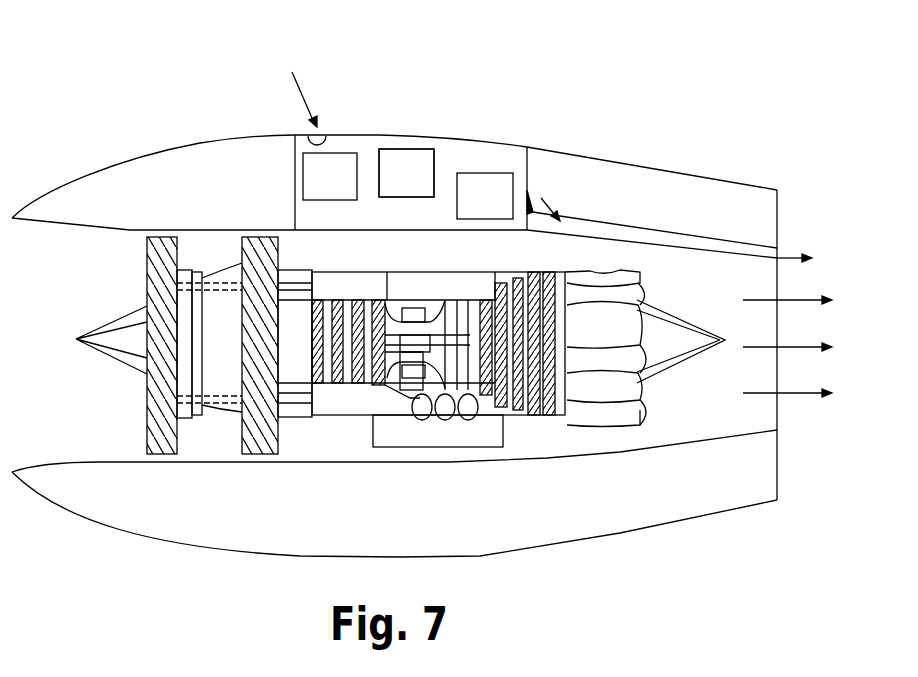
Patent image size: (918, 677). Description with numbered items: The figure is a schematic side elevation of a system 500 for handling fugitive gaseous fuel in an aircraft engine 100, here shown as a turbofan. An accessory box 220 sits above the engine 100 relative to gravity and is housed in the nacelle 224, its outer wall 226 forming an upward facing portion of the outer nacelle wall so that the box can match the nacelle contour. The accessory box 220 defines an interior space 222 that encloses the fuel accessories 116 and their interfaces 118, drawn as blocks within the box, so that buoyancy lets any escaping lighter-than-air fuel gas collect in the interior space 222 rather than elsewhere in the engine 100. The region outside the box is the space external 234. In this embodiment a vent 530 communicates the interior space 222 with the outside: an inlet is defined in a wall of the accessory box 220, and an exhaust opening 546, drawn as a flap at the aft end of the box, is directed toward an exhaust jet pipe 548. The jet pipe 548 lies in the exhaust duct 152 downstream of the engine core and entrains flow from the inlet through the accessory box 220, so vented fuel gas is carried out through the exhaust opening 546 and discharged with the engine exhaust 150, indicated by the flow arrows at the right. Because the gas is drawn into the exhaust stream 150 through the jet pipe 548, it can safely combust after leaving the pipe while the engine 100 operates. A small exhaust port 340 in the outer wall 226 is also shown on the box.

The engine 100 is at (391, 345).
The fuel accessory 116 is at (478, 202).
The interface 118 is at (406, 173).
The engine exhaust 150 is at (712, 408).
The exhaust duct 152 is at (788, 257).
The accessory box 220 is at (285, 164).
The interior space 222 is at (435, 148).
The nacelle 224 is at (120, 172).
The outer wall 226 is at (377, 135).
The space external 234 is at (461, 53).
The exhaust port 340 is at (311, 132).
The system 500 is at (322, 56).
The vent 530 is at (498, 90).
The exhaust opening 546 is at (531, 195).
The exhaust jet pipe 548 is at (667, 237).